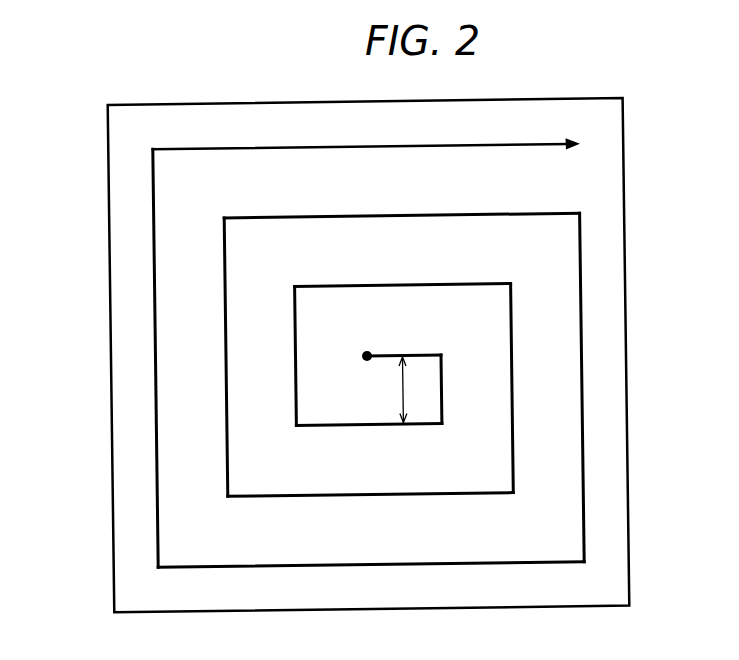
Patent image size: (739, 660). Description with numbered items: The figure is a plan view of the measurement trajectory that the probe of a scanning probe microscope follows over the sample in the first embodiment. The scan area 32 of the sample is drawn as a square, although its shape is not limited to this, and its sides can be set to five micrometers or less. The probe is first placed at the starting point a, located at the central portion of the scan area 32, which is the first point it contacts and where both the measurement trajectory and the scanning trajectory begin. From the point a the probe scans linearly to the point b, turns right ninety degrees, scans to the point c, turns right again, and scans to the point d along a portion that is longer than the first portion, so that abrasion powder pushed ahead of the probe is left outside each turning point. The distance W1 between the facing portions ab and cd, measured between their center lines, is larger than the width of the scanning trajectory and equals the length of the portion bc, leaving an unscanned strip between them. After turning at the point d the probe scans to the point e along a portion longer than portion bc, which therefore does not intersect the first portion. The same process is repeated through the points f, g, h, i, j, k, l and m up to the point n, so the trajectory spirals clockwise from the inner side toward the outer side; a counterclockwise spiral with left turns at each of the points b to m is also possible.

The scan area 32 is at (110, 246).
The starting point a is at (358, 353).
The point b is at (412, 346).
The point c is at (442, 403).
The point d is at (361, 423).
The point e is at (295, 343).
The point f is at (409, 280).
The point g is at (511, 399).
The point h is at (361, 496).
The point i is at (221, 343).
The point j is at (408, 206).
The point k is at (581, 401).
The point l is at (363, 566).
The point m is at (152, 346).
The point n is at (373, 142).
The distance between facing measurement trajectory portions W1 is at (392, 390).